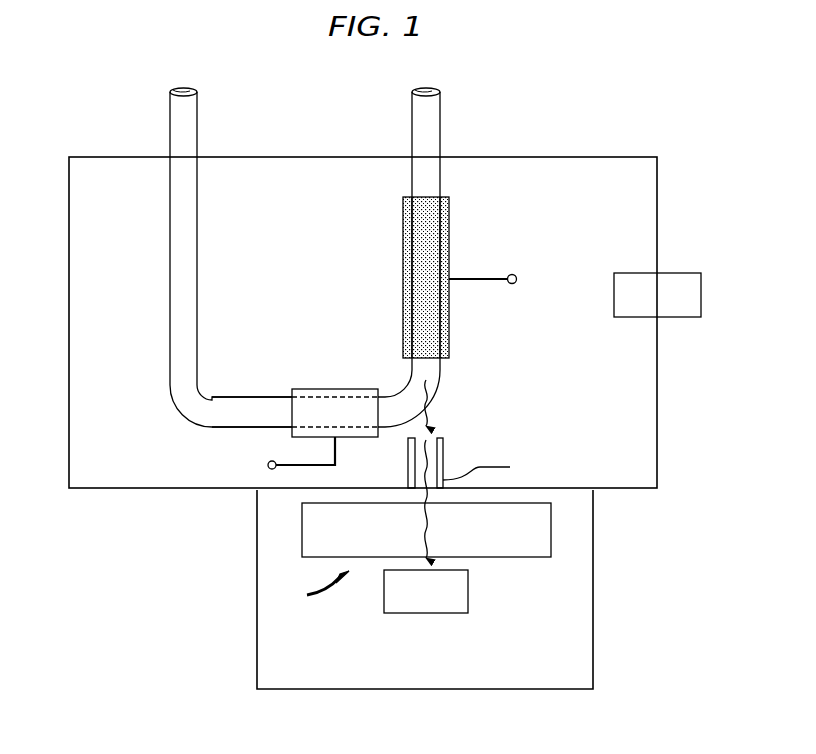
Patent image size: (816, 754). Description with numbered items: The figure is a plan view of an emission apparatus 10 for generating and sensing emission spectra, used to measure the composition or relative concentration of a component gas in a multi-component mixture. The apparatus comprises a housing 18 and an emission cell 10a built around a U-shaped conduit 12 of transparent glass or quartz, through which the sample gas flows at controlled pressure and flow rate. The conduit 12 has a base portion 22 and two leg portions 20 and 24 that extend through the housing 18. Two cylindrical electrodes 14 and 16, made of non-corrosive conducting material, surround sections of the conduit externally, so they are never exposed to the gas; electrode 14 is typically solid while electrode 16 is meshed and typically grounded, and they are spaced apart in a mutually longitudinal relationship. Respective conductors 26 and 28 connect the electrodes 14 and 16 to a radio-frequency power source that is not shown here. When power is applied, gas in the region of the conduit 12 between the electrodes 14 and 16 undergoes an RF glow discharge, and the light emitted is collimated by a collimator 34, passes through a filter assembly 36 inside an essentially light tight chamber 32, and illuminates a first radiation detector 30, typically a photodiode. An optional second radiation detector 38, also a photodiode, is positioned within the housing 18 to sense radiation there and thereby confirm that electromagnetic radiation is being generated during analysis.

The emission apparatus 10 is at (531, 70).
The emission cell 10a is at (440, 112).
The U-shaped conduit 12 is at (262, 397).
The cylindrical electrode 14 is at (330, 389).
The cylindrical electrode 16 is at (449, 235).
The housing 18 is at (69, 242).
The leg portion 20 is at (412, 180).
The base portion 22 is at (243, 430).
The leg portion 24 is at (170, 228).
The conductor 26 is at (336, 450).
The conductor 28 is at (483, 281).
The first radiation detector 30 is at (384, 596).
The light tight chamber 32 is at (341, 652).
The collimator 34 is at (445, 462).
The filter assembly 36 is at (317, 590).
The second radiation detector 38 is at (643, 273).